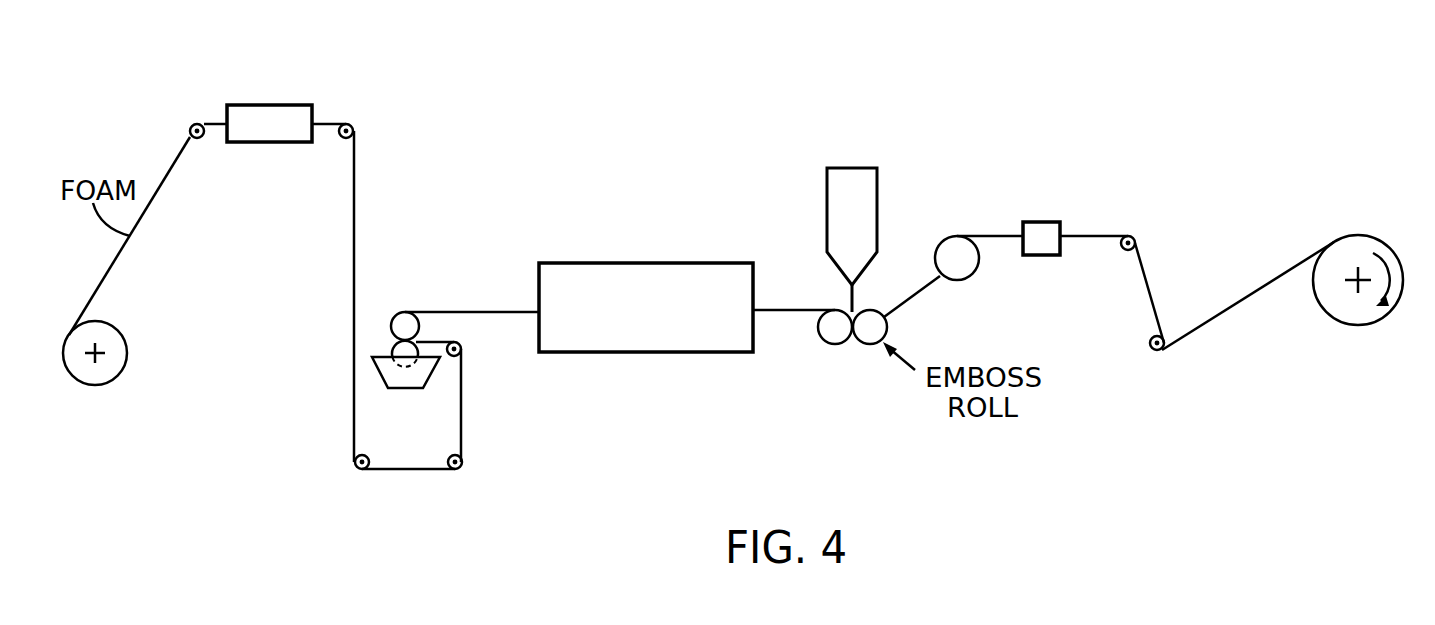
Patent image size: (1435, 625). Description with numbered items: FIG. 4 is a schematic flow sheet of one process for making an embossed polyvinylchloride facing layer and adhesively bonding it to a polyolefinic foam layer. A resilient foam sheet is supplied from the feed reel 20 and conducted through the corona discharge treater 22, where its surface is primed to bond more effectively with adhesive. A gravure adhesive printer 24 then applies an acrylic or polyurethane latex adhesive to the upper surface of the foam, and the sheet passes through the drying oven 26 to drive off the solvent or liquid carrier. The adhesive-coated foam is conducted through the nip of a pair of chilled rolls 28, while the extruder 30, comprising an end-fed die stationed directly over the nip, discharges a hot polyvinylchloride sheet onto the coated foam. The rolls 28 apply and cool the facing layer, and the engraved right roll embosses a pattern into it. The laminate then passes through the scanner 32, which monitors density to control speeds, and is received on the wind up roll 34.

The feed reel 20 is at (108, 382).
The corona discharge treater 22 is at (265, 143).
The gravure adhesive printer 24 is at (410, 390).
The drying oven 26 is at (645, 352).
The chilled rolls 28 is at (822, 342).
The extruder 30 is at (877, 205).
The scanner 32 is at (1042, 255).
The wind up roll 34 is at (1317, 300).